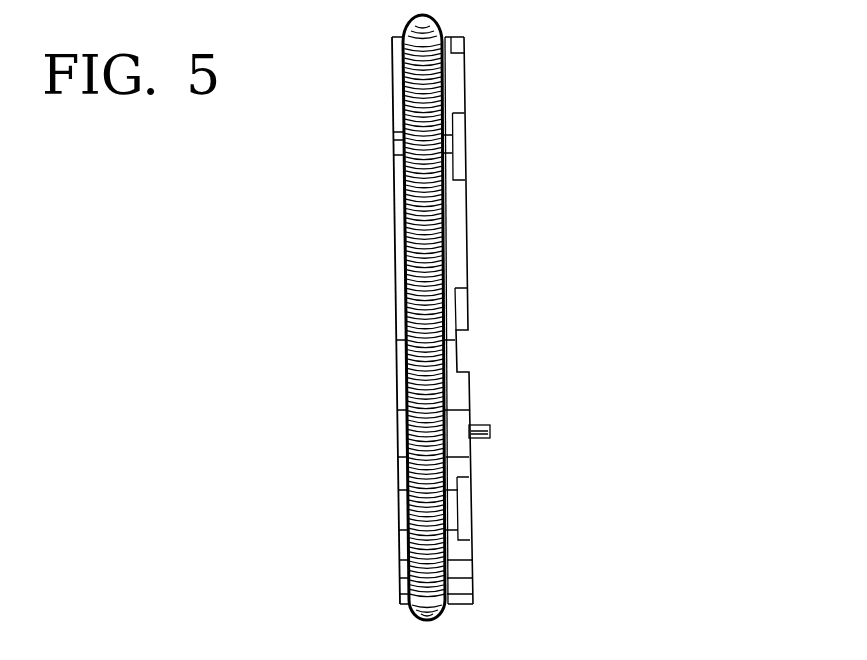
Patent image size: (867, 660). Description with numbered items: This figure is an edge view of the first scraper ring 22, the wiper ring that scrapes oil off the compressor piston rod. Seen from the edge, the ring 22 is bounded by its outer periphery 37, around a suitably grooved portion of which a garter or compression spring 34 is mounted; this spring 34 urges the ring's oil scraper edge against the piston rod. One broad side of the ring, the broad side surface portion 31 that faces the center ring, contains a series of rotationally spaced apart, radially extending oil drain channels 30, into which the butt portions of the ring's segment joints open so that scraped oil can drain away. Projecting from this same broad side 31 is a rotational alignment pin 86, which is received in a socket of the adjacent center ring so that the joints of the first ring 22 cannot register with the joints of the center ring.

The first scraper ring 22 is at (441, 317).
The oil drain channels 30 is at (526, 320).
The broad side surface portion 31 is at (468, 185).
The garter or compression spring 34 is at (424, 232).
The outer periphery 37 is at (458, 258).
The rotational alignment pin 86 is at (491, 436).